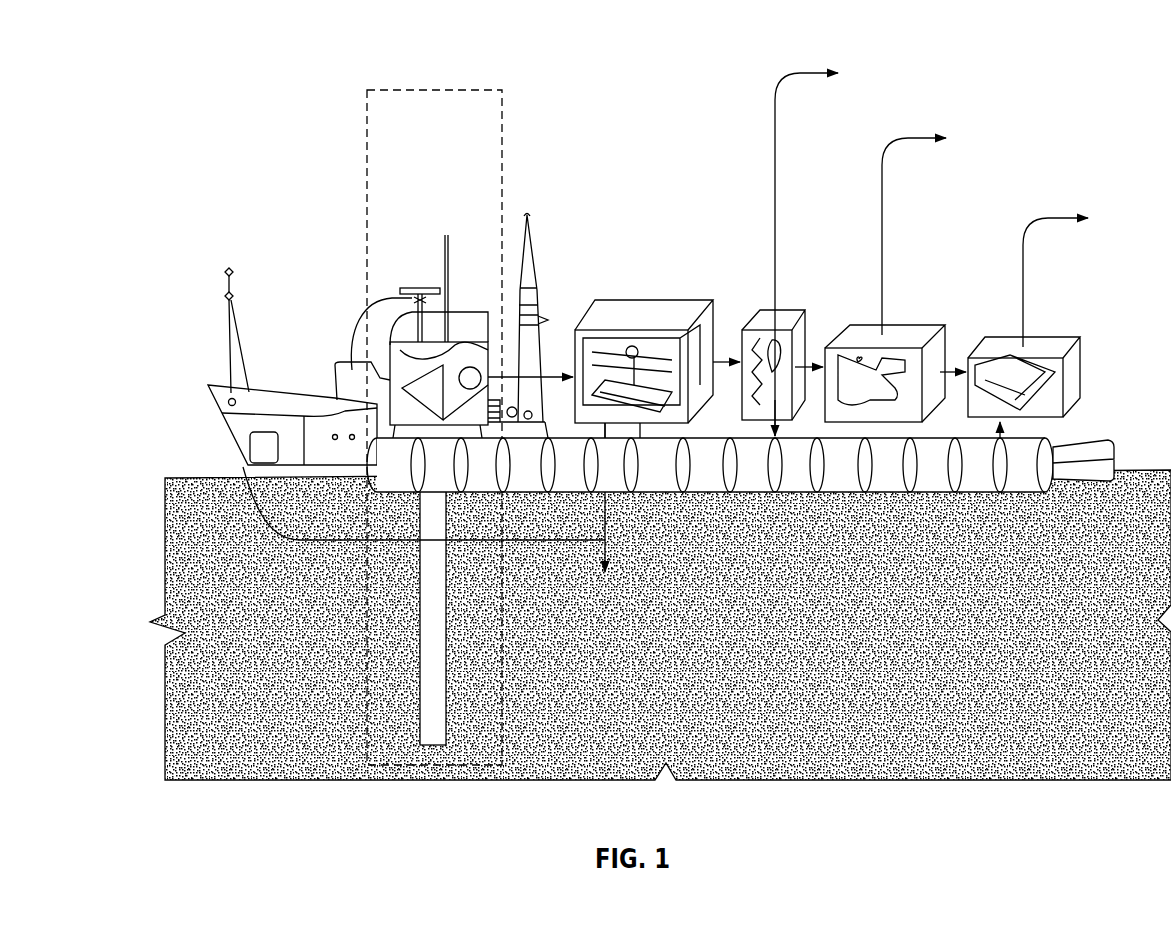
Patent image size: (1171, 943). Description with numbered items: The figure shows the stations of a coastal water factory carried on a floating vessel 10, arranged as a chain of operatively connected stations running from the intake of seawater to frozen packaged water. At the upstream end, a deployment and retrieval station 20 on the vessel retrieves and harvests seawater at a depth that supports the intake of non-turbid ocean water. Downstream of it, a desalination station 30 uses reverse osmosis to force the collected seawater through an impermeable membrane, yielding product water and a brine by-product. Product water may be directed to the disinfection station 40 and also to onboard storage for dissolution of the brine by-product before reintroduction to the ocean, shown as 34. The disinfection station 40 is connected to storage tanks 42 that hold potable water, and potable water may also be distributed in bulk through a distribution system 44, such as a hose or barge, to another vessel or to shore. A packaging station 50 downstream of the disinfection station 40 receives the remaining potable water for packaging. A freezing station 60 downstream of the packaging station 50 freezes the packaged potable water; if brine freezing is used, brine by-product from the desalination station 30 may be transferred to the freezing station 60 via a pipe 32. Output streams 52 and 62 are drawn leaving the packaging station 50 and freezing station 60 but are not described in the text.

The floating vessel 10 is at (246, 196).
The deployment and retrieval station 20 is at (367, 138).
The desalination station 30 is at (662, 298).
The pipe 32 is at (740, 502).
The dissolution of brine by-product before reintroduction to the ocean 34 is at (612, 528).
The disinfection station 40 is at (765, 303).
The storage tanks 42 is at (897, 494).
The distribution system 44 is at (830, 70).
The packaging station 50 is at (865, 323).
The output stream 52 is at (935, 135).
The freezing station 60 is at (993, 336).
The export output 62 is at (1060, 215).